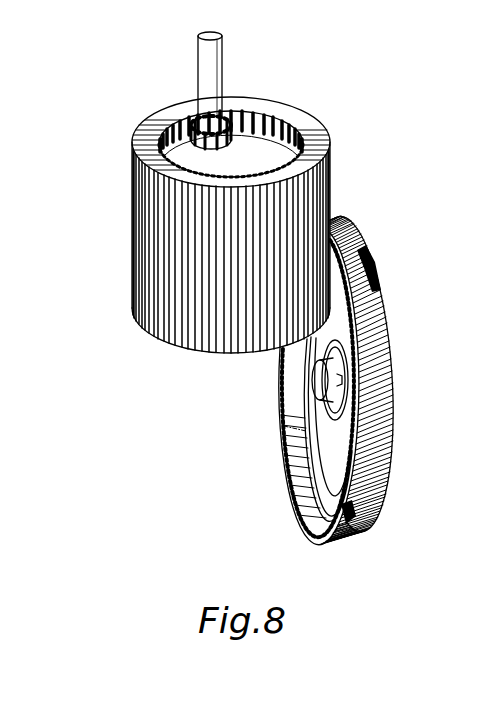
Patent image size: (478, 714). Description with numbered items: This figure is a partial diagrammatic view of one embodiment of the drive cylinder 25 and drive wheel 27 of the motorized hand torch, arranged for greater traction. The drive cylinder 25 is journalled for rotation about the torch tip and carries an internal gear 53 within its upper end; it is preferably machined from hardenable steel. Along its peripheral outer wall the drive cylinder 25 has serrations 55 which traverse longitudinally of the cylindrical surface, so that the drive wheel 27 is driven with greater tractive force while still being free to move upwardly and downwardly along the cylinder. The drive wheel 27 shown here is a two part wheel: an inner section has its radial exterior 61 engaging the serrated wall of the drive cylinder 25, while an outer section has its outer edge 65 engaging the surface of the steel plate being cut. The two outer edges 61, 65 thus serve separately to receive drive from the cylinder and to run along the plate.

The drive cylinder 25 is at (134, 232).
The internal gear 53 is at (265, 120).
The serrations 55 is at (172, 342).
The drive wheel 27 is at (396, 380).
The radial exterior 61 is at (297, 492).
The outer edge 65 is at (344, 546).